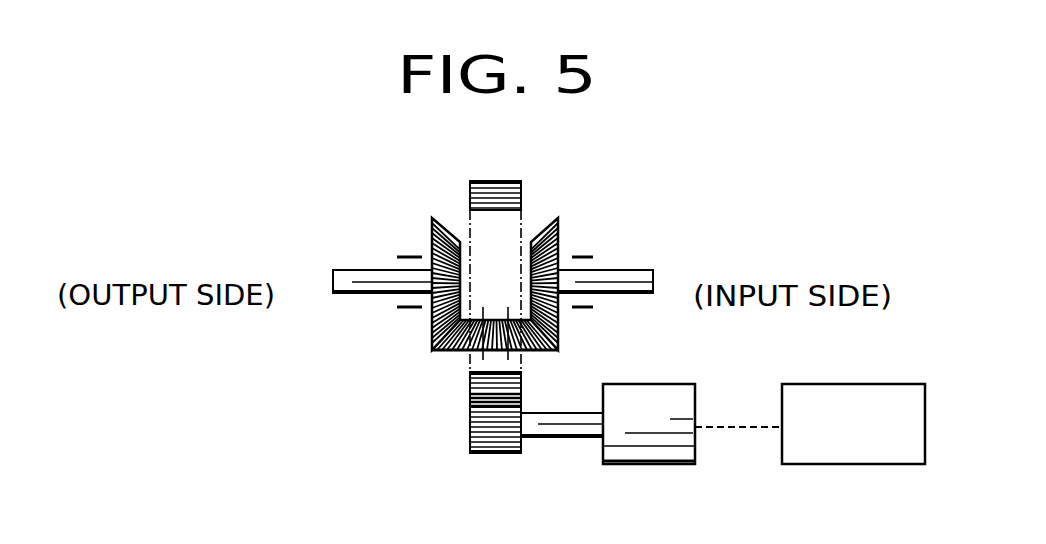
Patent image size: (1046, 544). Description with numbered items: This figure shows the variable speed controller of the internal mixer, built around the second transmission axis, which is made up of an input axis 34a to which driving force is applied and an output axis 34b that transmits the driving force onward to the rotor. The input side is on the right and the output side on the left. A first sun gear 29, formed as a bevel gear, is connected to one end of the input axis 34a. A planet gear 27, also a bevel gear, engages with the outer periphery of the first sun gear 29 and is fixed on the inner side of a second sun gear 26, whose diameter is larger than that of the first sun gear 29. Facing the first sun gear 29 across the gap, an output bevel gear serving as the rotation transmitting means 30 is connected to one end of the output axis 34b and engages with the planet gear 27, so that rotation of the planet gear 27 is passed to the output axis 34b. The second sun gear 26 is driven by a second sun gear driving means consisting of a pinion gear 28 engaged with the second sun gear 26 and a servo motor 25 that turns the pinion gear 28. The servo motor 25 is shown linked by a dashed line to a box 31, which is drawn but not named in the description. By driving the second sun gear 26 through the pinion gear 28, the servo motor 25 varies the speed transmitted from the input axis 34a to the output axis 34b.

The servo motor 25 is at (644, 465).
The second sun gear 26 is at (470, 387).
The planet gear 27 is at (450, 351).
The pinion gear 28 is at (470, 435).
The first sun gear 29 is at (559, 221).
The rotation transmitting means 30 is at (432, 220).
The control unit 31 is at (867, 465).
The input axis 34a is at (640, 270).
The output axis 34b is at (352, 270).